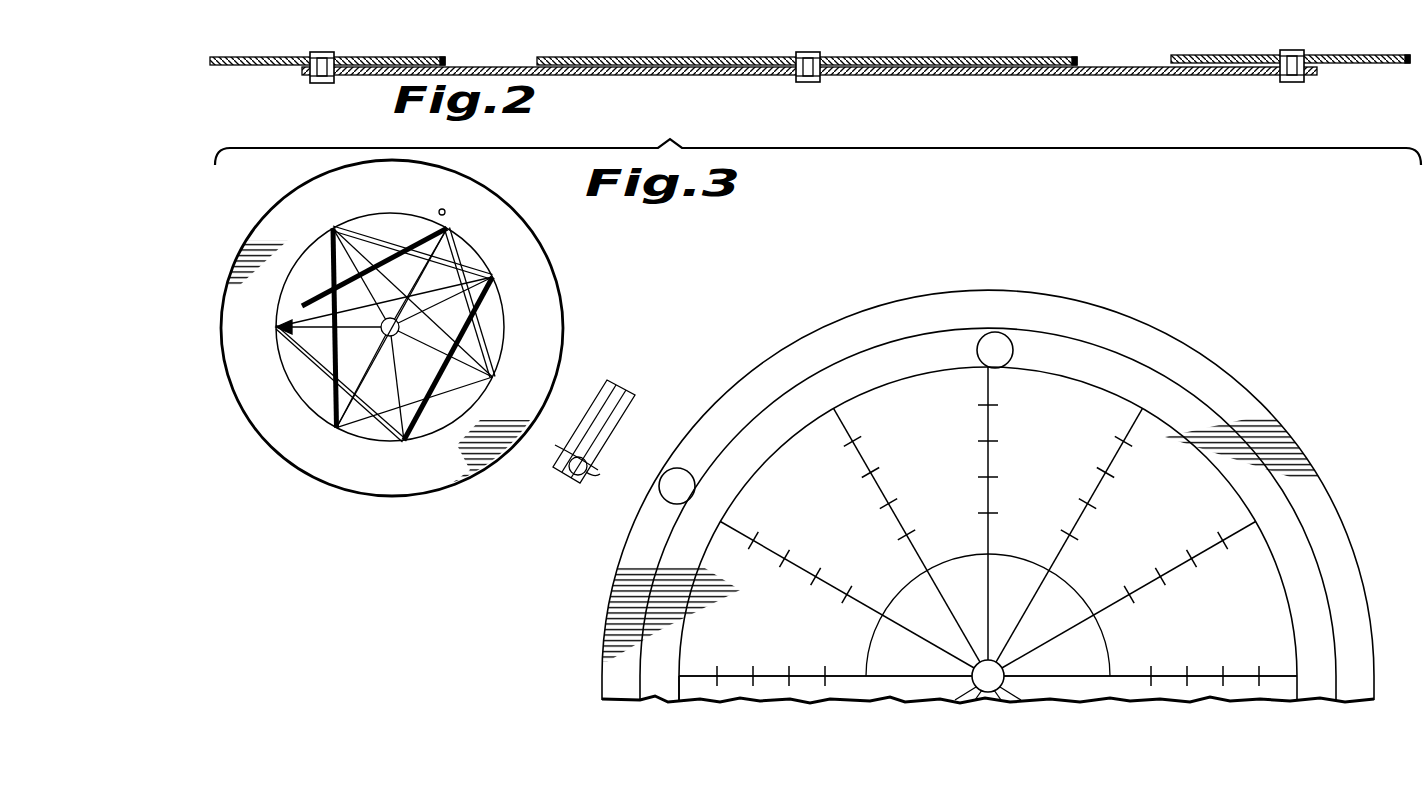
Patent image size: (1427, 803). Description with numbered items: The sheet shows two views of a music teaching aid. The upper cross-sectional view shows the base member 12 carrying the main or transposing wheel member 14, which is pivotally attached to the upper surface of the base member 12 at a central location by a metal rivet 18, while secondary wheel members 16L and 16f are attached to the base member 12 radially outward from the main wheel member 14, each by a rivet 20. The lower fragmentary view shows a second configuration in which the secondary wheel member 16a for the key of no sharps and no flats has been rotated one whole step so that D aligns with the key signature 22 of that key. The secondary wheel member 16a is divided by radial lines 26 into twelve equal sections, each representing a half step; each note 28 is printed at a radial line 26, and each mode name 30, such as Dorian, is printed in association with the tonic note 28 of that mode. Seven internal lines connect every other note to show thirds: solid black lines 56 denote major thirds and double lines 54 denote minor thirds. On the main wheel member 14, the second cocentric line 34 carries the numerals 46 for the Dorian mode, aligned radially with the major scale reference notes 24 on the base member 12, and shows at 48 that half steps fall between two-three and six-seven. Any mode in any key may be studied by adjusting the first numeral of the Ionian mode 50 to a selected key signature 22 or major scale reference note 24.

In FIG. 2, the base member 12 is at (700, 78).
In FIG. 2, the main or transposing wheel member 14 is at (700, 57).
In FIG. 3, the main or transposing wheel member 14 is at (890, 300).
In FIG. 2, the secondary wheel member 16L is at (380, 57).
In FIG. 2, the secondary wheel member 16f is at (1195, 55).
In FIG. 3, the secondary wheel member 16a is at (560, 312).
In FIG. 2, the metal rivet 18 is at (810, 52).
In FIG. 3, the metal rivet 18 is at (990, 680).
In FIG. 2, the rivet 20 is at (322, 52).
In FIG. 3, the rivet 20 is at (412, 423).
In FIG. 3, the key signature 22 is at (615, 385).
In FIG. 3, the major scale reference note 24 is at (572, 640).
In FIG. 3, the radial lines 26 is at (320, 367).
In FIG. 3, the note 28 is at (383, 480).
In FIG. 3, the mode name 30 is at (298, 270).
In FIG. 3, the second cocentric line 34 is at (670, 700).
In FIG. 3, the numerals 46 is at (818, 402).
In FIG. 3, the half-step interval indication 48 is at (1120, 372).
In FIG. 3, the tonic or first numeral of the Ionian mode 50 is at (598, 472).
In FIG. 3, the double lines 54 is at (482, 260).
In FIG. 3, the solid black lines 56 is at (500, 300).